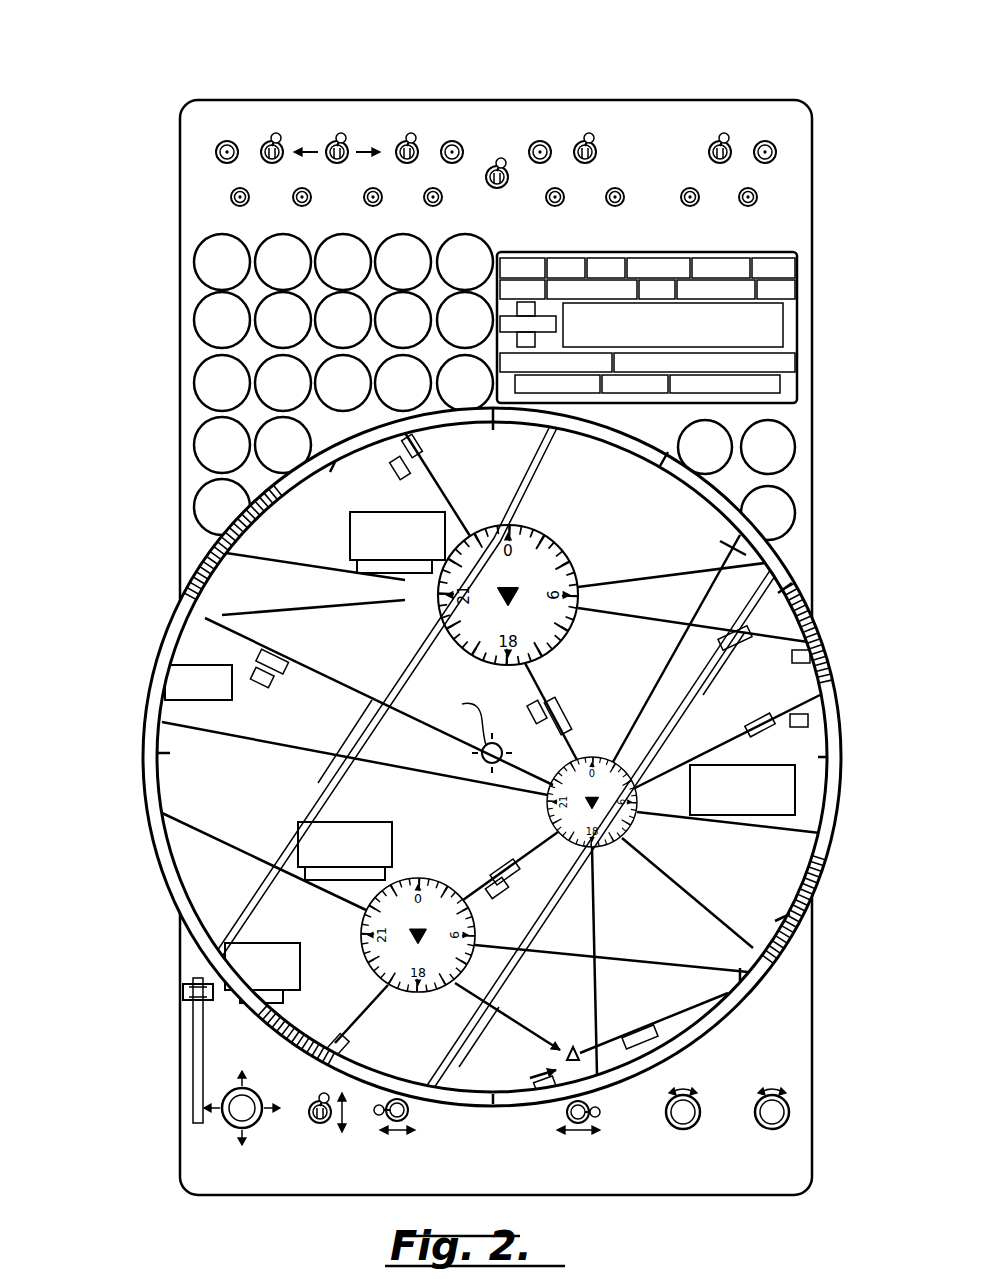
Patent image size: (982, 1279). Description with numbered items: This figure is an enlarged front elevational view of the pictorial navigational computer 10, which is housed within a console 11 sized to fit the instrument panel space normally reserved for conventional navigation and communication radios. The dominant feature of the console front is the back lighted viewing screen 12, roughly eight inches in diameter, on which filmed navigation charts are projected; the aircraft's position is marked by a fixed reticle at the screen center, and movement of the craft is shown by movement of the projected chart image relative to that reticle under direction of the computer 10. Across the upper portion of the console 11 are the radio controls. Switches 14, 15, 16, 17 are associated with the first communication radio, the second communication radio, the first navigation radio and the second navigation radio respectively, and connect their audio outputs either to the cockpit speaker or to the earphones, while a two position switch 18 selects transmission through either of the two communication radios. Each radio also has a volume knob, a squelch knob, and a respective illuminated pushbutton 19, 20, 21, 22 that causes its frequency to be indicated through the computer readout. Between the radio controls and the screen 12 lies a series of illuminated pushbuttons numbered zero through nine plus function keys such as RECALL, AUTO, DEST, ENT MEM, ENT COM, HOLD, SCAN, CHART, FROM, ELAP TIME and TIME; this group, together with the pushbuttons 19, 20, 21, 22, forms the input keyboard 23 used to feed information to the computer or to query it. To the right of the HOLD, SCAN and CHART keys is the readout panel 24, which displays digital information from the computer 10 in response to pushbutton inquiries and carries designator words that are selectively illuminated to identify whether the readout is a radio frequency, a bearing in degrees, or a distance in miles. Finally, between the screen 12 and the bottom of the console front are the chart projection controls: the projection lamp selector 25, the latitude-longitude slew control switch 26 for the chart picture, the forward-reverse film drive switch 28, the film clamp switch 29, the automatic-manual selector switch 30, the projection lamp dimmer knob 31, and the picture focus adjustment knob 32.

The computer 10 is at (160, 58).
The console 11 is at (183, 212).
The viewing screen 12 is at (178, 800).
The switch 14 is at (270, 140).
The switch 15 is at (408, 140).
The switch 16 is at (587, 140).
The switch 17 is at (722, 140).
The two position switch 18 is at (338, 140).
The illuminated pushbutton 19 is at (222, 148).
The illuminated pushbutton 20 is at (453, 140).
The illuminated pushbutton 21 is at (541, 140).
The illuminated pushbutton 22 is at (766, 140).
The input keyboard 23 is at (186, 358).
The readout panel 24 is at (798, 322).
The projection lamp selector 25 is at (182, 992).
The latitude-longitude slew control switch 26 is at (232, 1118).
The forward-reverse film drive switch 28 is at (318, 1099).
The film clamp switch 29 is at (411, 1111).
The automatic-manual selector switch 30 is at (596, 1108).
The projection lamp dimmer knob 31 is at (692, 1100).
The picture focus adjustment knob 32 is at (790, 1112).